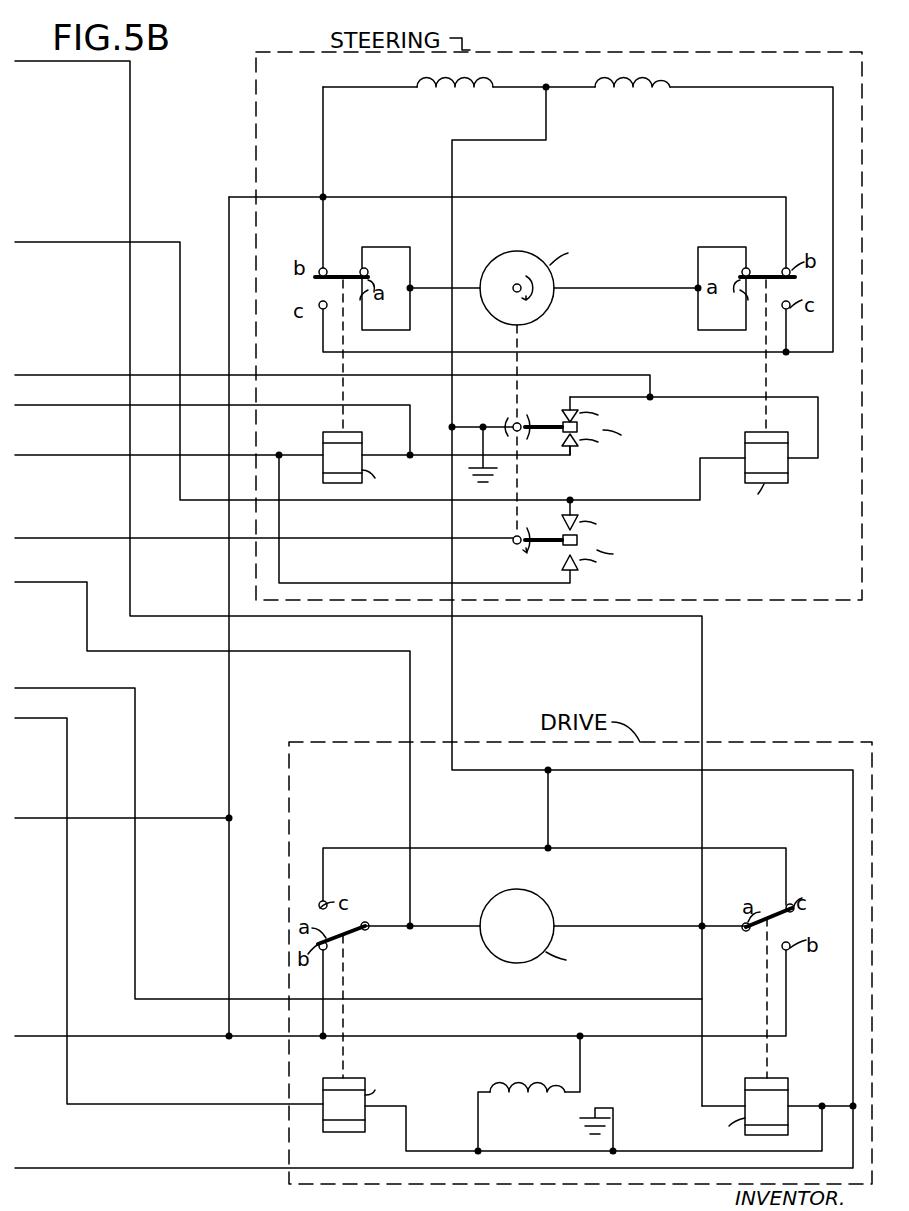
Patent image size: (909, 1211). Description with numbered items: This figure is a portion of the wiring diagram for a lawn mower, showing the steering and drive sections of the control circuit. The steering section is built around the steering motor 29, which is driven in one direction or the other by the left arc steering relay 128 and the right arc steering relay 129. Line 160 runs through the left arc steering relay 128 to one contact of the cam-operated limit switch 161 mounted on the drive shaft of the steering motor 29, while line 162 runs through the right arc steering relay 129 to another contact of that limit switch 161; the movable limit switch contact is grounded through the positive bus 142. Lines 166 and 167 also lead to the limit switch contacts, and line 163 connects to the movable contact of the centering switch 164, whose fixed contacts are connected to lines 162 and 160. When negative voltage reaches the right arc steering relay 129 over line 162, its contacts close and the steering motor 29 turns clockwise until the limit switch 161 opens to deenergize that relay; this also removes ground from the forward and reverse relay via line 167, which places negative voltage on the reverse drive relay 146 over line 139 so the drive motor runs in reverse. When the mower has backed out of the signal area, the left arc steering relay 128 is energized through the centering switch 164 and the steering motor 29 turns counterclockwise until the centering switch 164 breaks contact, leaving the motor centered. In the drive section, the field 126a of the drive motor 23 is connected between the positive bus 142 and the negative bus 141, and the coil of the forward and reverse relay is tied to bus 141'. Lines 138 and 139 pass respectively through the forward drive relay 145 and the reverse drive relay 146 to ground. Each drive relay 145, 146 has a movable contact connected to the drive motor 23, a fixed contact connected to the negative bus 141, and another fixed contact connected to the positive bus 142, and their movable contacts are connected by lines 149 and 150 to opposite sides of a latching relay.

The line 150 is at (30, 62).
The line 162 is at (33, 242).
The line 167 is at (33, 375).
The line 166 is at (30, 406).
The line 160 is at (30, 456).
The line 163 is at (26, 538).
The line 149 is at (21, 582).
The line 139 is at (16, 688).
The line 138 is at (24, 719).
The bus 141' is at (124, 616).
The negative bus 141 is at (400, 1016).
The positive bus 142 is at (30, 1156).
The steering motor 29 is at (552, 305).
The left arc steering relay 128 is at (342, 420).
The right arc steering relay 129 is at (770, 386).
The limit switch 161 is at (580, 450).
The centering switch 164 is at (584, 569).
The drive motor 23 is at (530, 940).
The forward drive relay 145 is at (330, 1058).
The reverse drive relay 146 is at (772, 1061).
The field 126a is at (519, 1078).